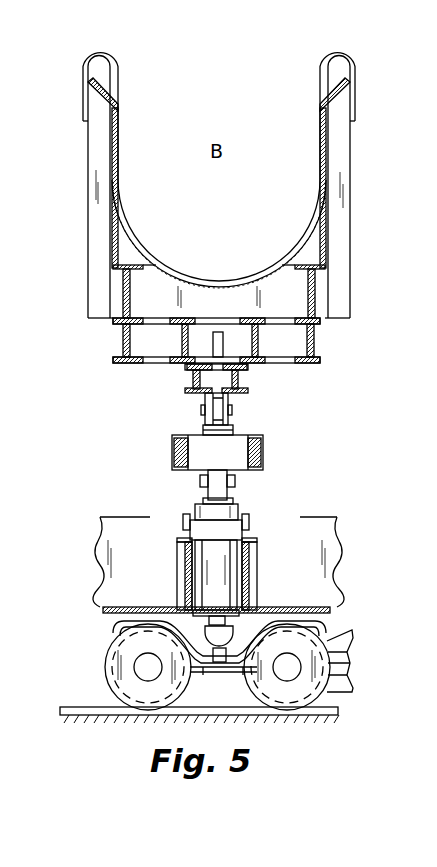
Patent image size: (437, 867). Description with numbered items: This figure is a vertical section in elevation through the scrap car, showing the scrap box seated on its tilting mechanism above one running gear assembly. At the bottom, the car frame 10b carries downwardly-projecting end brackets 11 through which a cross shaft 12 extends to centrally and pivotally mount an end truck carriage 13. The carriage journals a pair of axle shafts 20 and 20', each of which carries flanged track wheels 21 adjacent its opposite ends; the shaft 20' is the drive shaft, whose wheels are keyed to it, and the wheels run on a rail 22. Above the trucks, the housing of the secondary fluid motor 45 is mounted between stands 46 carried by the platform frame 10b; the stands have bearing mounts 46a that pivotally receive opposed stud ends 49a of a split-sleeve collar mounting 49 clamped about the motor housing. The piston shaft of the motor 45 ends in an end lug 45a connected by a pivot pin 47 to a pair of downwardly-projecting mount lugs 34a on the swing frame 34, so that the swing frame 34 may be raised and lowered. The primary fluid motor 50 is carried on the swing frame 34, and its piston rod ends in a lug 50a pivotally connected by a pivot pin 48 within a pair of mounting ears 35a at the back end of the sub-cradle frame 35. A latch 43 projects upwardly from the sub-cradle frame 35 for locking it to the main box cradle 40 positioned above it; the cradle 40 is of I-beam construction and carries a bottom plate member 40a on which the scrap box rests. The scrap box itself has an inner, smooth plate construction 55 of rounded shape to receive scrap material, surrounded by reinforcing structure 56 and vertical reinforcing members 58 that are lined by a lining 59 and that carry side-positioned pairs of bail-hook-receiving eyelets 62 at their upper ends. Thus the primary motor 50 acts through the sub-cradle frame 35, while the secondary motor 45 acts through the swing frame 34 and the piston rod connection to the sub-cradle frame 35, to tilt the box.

The car frame 10b is at (336, 599).
The end brackets 11 is at (223, 679).
The cross shaft 12 is at (220, 662).
The end truck carriage 13 is at (114, 629).
The axle shaft 20 is at (128, 667).
The drive shaft 20' is at (317, 667).
The flanged track wheels 21 is at (108, 657).
The rail 22 is at (62, 708).
The swing frame 34 is at (264, 452).
The mount lugs 34a is at (206, 487).
The sub-cradle frame 35 is at (240, 380).
The mounting lugs 35a is at (236, 407).
The main box cradle 40 is at (121, 342).
The bottom plate member 40a is at (128, 364).
The latch 43 is at (221, 332).
The secondary fluid motor 45 is at (205, 585).
The end lug 45a is at (223, 494).
The stands 46 is at (177, 565).
The bearing mounts 46a is at (178, 541).
The pivot pin 47 is at (205, 481).
The pivot pin 48 is at (203, 409).
The split-sleeve collar mounting 49 is at (198, 518).
The stud ends 49a is at (250, 522).
The primary fluid motor 50 is at (205, 428).
The lug 50a is at (232, 428).
The inner plate construction 55 is at (213, 283).
The reinforcing structure 56 is at (131, 293).
The vertical reinforcing members 58 is at (88, 181).
The lining 59 is at (323, 97).
The eyelets 62 is at (93, 56).